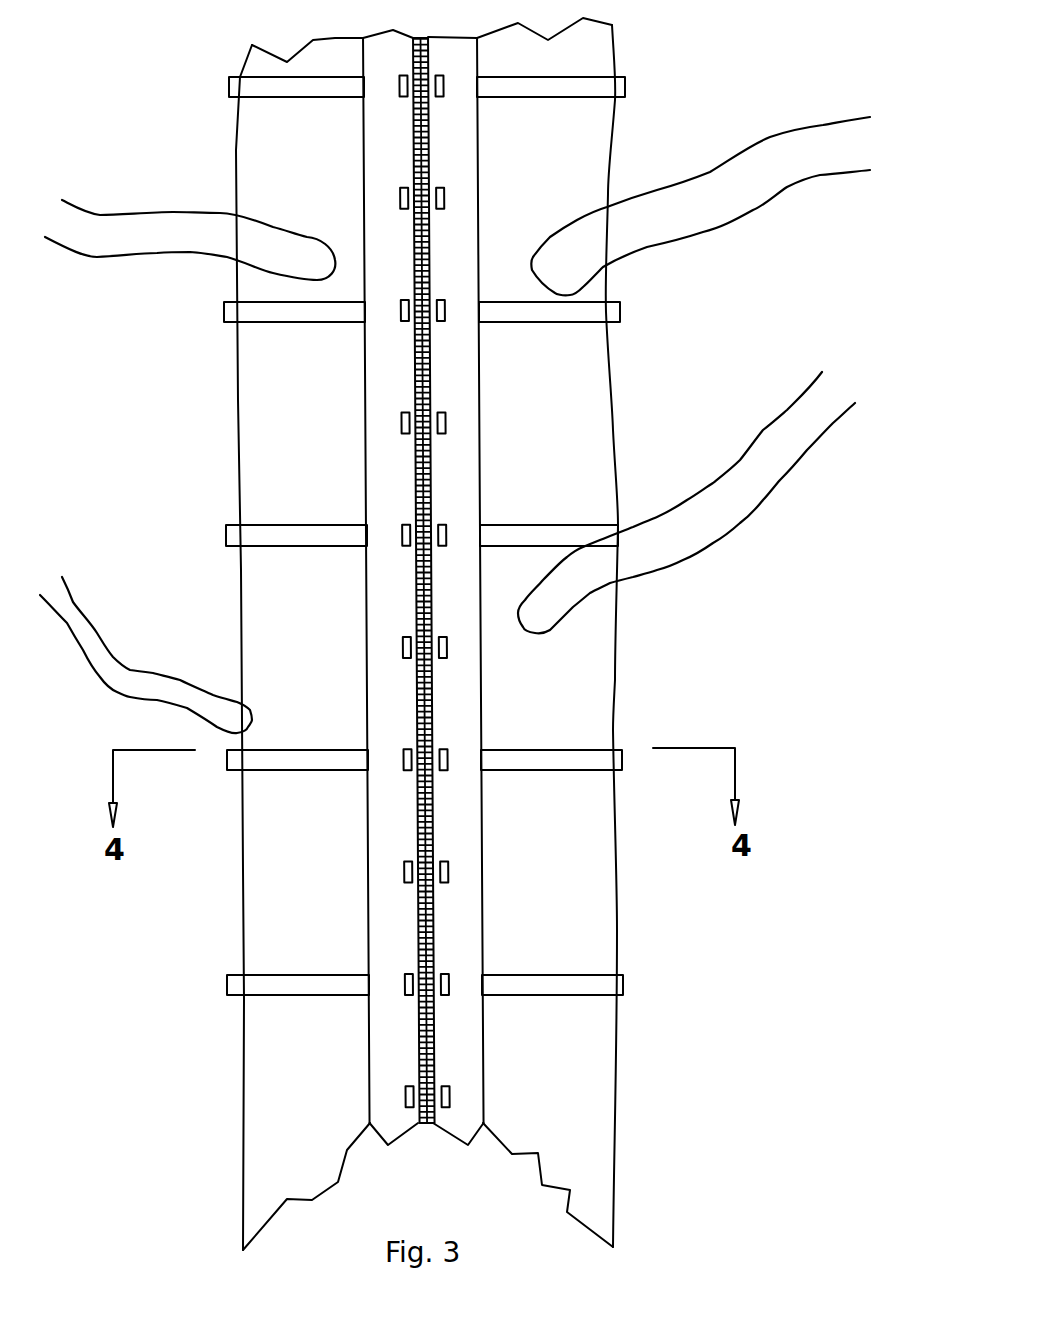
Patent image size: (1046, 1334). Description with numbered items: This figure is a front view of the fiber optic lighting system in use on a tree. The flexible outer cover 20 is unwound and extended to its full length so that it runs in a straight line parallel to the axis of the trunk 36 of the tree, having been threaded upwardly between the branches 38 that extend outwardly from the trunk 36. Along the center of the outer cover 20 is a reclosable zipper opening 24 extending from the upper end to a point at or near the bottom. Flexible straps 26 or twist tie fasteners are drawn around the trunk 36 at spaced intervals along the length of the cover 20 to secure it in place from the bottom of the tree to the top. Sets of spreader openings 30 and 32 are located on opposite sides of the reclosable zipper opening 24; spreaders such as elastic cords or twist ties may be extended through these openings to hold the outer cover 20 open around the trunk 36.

The outer cover 20 is at (470, 140).
The zipper opening 24 is at (433, 815).
The straps 26 is at (237, 87).
The spreader openings 30 is at (400, 194).
The spreader openings 32 is at (442, 322).
The trunk 36 is at (613, 952).
The branches 38 is at (757, 190).